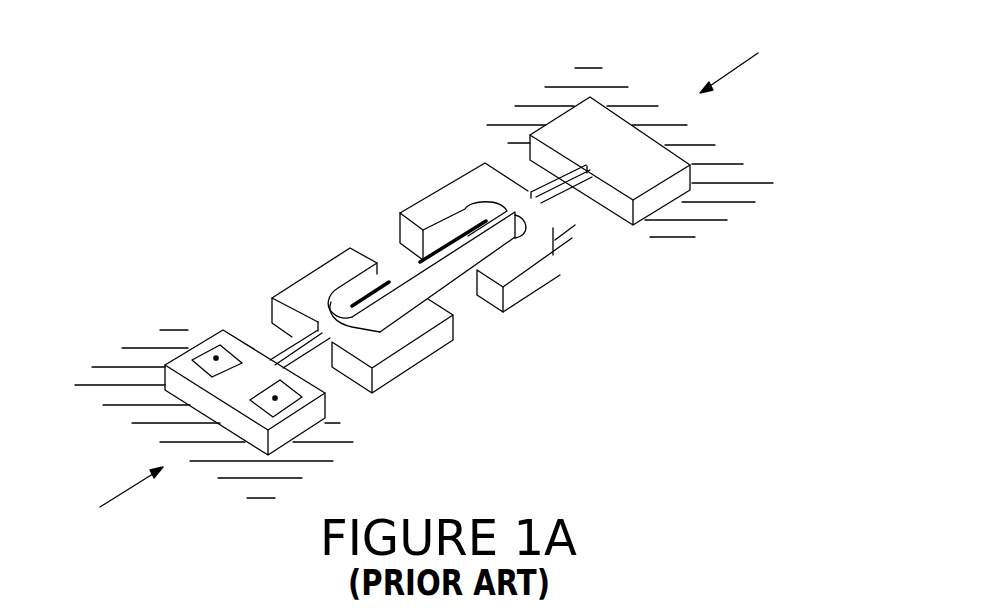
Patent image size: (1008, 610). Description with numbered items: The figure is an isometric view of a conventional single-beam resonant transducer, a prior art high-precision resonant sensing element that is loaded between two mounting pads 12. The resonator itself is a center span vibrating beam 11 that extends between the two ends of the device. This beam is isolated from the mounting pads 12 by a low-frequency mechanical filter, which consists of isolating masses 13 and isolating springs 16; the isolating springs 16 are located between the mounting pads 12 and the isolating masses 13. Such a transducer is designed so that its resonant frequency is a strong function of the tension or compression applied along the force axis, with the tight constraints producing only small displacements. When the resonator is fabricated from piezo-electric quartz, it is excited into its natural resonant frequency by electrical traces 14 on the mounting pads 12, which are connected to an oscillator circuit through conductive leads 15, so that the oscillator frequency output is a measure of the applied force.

The center span vibrating beam 11 is at (440, 278).
The mounting pads 12 is at (233, 392).
The isolating masses 13 is at (350, 248).
The electrical traces 14 is at (199, 351).
The conductive leads 15 is at (216, 355).
The isolating springs 16 is at (282, 338).